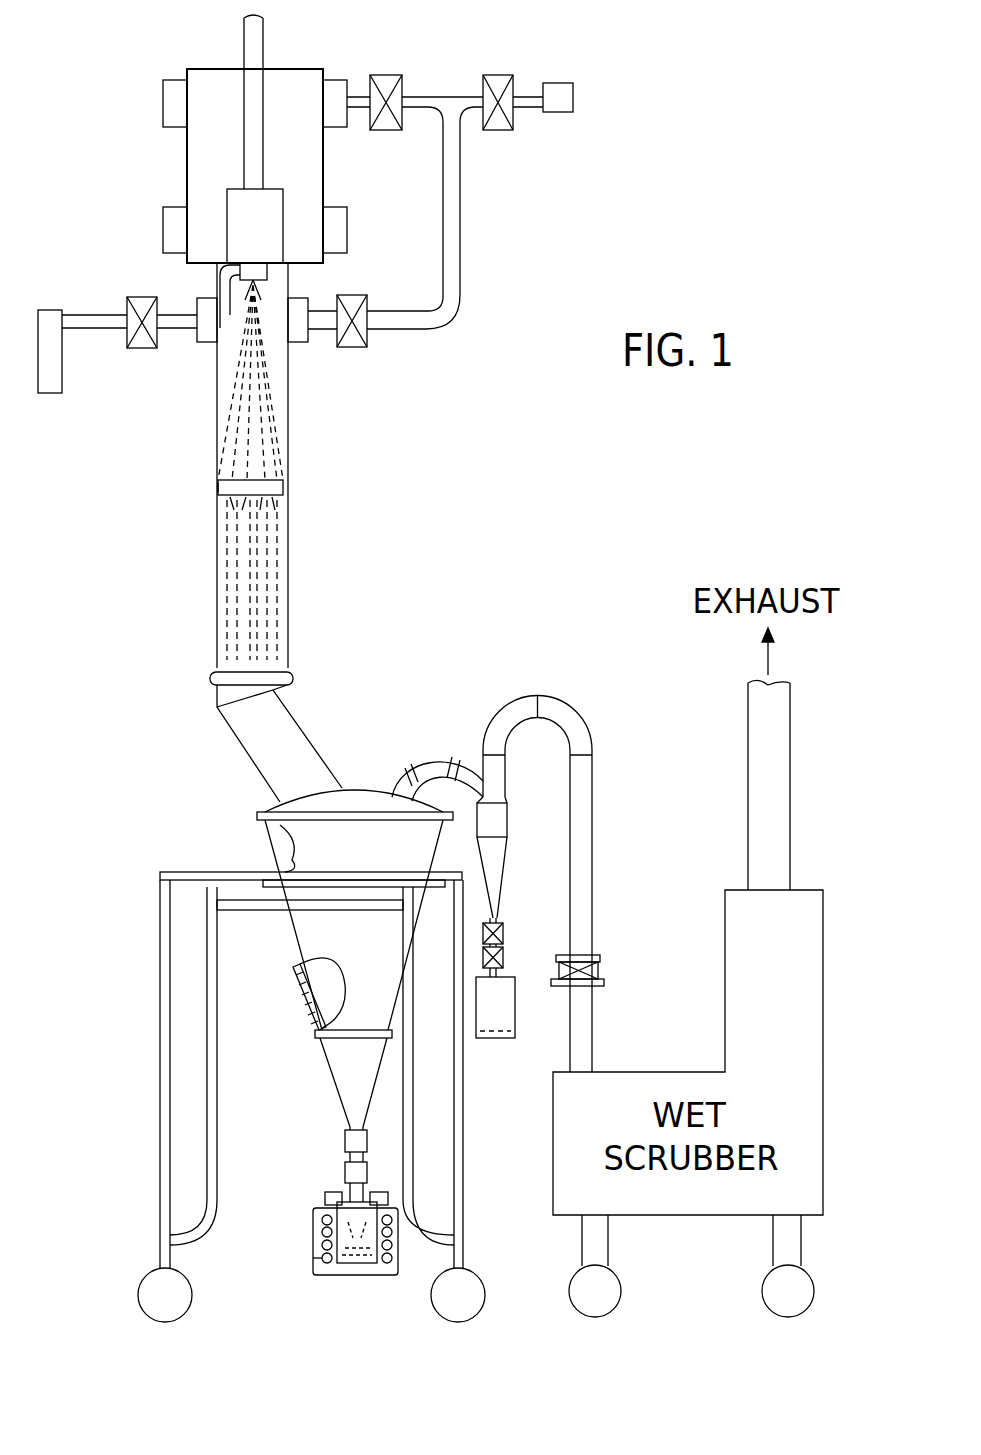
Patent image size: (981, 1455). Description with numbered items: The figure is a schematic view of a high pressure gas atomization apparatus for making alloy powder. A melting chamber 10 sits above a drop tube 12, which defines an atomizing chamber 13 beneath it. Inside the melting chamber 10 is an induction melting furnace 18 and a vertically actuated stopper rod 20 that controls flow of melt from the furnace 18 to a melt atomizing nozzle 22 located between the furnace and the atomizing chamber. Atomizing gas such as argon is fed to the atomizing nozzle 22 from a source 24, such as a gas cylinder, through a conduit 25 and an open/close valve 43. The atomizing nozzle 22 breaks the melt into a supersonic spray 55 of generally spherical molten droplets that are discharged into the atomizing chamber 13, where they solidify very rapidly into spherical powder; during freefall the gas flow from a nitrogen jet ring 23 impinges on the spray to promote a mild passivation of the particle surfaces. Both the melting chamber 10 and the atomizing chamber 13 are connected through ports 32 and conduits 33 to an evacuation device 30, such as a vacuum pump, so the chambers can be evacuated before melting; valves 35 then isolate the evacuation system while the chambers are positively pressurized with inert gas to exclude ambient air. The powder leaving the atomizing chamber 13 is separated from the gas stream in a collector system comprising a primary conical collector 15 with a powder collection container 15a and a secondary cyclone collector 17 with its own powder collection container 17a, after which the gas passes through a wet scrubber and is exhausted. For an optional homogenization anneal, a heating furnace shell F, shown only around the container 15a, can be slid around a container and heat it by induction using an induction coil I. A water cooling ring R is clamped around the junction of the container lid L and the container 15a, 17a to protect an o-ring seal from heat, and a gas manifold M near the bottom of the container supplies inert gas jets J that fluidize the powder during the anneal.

The melting chamber 10 is at (143, 170).
The vertically actuated stopper rod 20 is at (248, 137).
The induction melting furnace 18 is at (270, 237).
The port 32 is at (335, 88).
The valve 35 is at (398, 90).
The conduit 33 is at (417, 108).
The evacuation device 30 is at (563, 112).
The conduit 25 is at (87, 315).
The open/close valve 43 is at (137, 350).
The source 24 is at (55, 393).
The melt atomizing nozzle 22 is at (262, 288).
The atomizing chamber 13 is at (218, 378).
The supersonic spray 55 is at (288, 468).
The nitrogen jet ring 23 is at (217, 490).
The drop tube 12 is at (300, 550).
The primary conical collector 15 is at (255, 848).
The secondary cyclone collector 17 is at (525, 840).
The container lid L is at (507, 972).
The powder collection container 17a is at (498, 1038).
The water cooling ring R is at (337, 1192).
The powder collection container 15a is at (325, 1275).
The gas manifold M is at (360, 1263).
The inert gas jet J is at (317, 1221).
The induction coil I is at (397, 1258).
The heating furnace shell F is at (323, 1258).